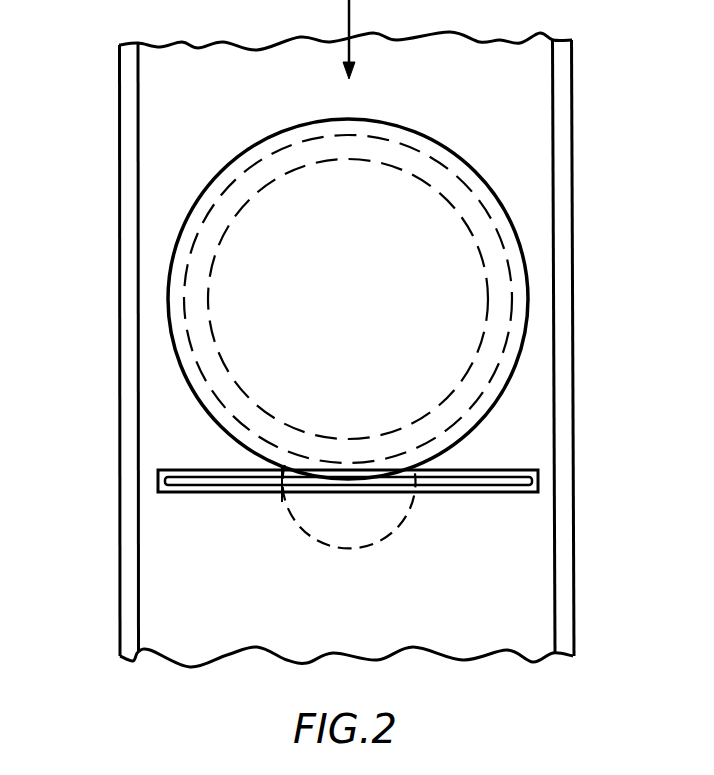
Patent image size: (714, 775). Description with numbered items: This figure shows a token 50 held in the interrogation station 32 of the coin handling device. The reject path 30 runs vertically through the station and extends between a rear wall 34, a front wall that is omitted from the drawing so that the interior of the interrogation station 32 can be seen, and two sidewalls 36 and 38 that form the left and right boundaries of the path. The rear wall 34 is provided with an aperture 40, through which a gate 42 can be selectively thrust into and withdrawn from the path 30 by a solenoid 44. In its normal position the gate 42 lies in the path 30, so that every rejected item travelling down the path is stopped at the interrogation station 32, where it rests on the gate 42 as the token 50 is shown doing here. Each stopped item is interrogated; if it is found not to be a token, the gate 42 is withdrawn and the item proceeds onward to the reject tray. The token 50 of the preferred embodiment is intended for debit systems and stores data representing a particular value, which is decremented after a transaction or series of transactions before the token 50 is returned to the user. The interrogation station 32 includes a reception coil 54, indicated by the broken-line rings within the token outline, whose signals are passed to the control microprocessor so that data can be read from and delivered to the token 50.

The reject path 30 is at (350, 15).
The interrogation station 32 is at (331, 333).
The rear wall 34 is at (503, 55).
The sidewall 36 is at (127, 382).
The sidewall 38 is at (573, 366).
The aperture 40 is at (348, 481).
The gate 42 is at (487, 470).
The solenoid 44 is at (383, 545).
The token 50 is at (348, 292).
The reception coil 54 is at (482, 253).